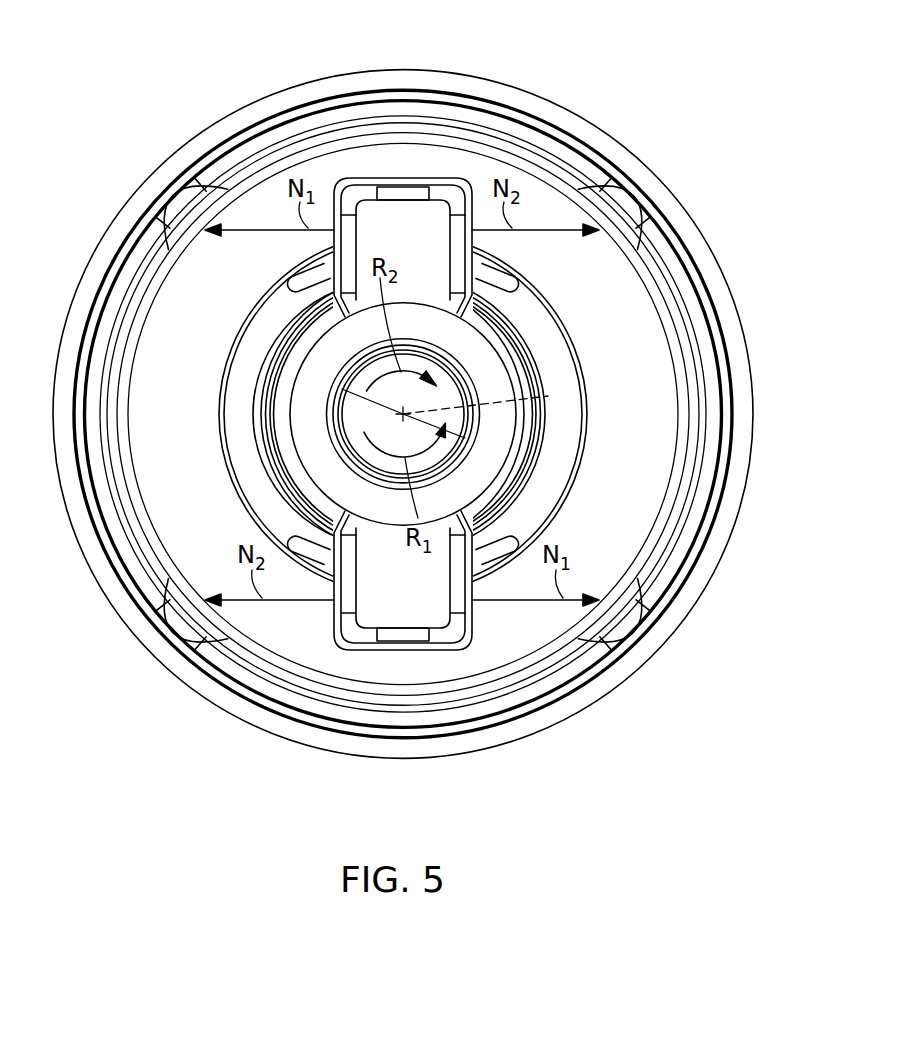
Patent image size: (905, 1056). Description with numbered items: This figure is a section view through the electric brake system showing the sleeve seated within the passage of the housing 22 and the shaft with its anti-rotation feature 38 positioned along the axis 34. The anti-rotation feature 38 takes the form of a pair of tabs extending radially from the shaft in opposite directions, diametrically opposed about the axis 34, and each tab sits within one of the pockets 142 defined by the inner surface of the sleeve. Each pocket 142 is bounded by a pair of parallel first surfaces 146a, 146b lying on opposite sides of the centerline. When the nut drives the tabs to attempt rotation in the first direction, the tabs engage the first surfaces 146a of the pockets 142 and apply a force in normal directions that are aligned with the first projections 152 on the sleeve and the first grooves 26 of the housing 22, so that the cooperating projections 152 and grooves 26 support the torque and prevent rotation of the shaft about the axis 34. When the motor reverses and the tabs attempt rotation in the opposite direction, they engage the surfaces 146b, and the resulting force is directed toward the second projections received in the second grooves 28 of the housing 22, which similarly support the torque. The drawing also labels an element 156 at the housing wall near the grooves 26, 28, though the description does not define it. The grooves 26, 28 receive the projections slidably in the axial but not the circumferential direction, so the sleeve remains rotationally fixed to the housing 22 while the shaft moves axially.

The housing 22 is at (752, 440).
The first grooves 26 is at (163, 198).
The second grooves 28 is at (655, 200).
The axis 34 is at (548, 396).
The anti-rotation feature 38 is at (430, 228).
The pockets 142 is at (408, 165).
The first surface 146a is at (362, 180).
The first surface 146b is at (443, 180).
The first projections 152 is at (203, 200).
The rim 156 is at (642, 238).